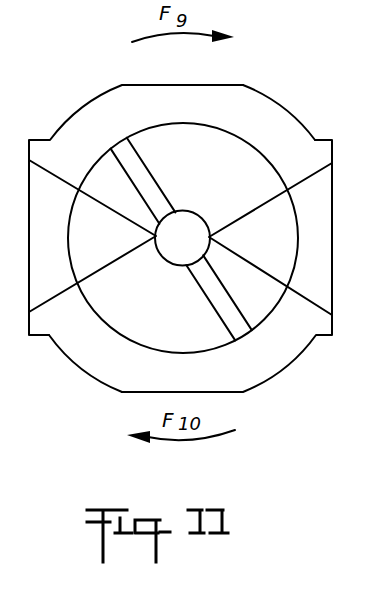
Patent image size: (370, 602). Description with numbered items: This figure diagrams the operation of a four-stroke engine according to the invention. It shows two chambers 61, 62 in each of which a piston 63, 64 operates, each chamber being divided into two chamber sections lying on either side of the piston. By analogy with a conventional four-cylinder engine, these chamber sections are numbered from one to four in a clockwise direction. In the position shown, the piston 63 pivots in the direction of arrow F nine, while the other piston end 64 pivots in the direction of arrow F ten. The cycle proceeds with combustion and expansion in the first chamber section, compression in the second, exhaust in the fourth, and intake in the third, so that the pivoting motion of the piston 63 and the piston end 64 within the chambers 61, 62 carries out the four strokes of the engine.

The chamber 61 is at (240, 138).
The chamber 62 is at (142, 348).
The piston 63 is at (118, 146).
The piston end 64 is at (235, 320).